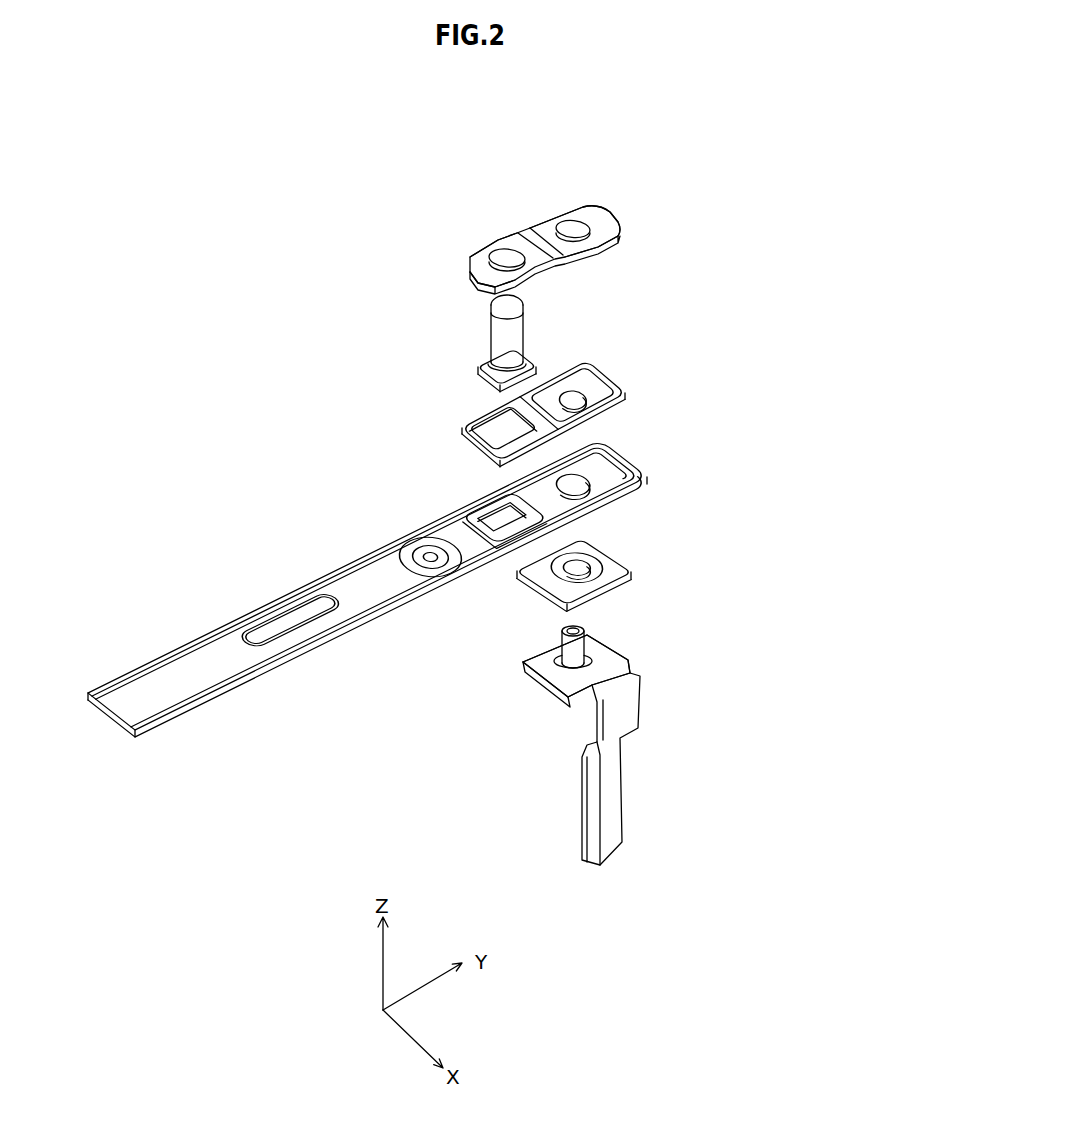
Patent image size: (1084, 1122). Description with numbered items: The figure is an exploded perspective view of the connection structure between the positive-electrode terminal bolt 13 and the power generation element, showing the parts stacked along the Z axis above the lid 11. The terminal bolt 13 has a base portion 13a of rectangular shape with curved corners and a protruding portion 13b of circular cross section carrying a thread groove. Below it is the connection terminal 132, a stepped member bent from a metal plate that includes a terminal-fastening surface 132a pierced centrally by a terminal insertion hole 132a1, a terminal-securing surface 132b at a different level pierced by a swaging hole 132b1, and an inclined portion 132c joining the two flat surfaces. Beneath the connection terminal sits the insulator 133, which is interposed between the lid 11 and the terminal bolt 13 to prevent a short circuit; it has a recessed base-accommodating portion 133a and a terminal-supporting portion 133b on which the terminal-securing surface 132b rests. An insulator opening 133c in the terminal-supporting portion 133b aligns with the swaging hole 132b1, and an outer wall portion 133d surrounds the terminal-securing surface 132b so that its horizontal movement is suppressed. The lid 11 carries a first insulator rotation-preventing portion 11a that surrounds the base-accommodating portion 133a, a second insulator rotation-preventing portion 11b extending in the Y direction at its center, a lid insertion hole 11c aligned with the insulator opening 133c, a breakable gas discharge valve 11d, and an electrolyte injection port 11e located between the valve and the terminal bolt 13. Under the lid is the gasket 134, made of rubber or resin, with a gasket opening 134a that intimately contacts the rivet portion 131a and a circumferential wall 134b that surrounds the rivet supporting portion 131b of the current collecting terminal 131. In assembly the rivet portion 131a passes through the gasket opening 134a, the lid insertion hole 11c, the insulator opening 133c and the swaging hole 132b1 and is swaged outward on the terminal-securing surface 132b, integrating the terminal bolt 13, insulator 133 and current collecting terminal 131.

The lid 11 is at (218, 673).
The first insulator rotation-preventing portion 11a is at (477, 517).
The second insulator rotation-preventing portion 11b is at (505, 520).
The lid insertion hole 11c is at (580, 490).
The gas discharge valve 11d is at (287, 622).
The electrolyte injection port 11e is at (393, 540).
The terminal bolt (positive electrode) 13 is at (549, 335).
The base portion 13a is at (480, 383).
The protruding portion 13b is at (500, 337).
The current collecting terminal (positive electrode) 131 is at (610, 800).
The rivet portion 131a is at (550, 680).
The rivet supporting portion 131b is at (600, 660).
The connection terminal (positive electrode) 132 is at (593, 180).
The terminal-fastening surface 132a is at (497, 238).
The terminal insertion hole 132a1 is at (490, 262).
The terminal-securing surface 132b is at (610, 223).
The swaging hole 132b1 is at (583, 240).
The inclined portion 132c is at (523, 232).
The insulator (first gasket) 133 is at (664, 395).
The base-accommodating portion 133a is at (462, 426).
The terminal-supporting portion 133b is at (604, 390).
The insulator opening 133c is at (588, 412).
The outer wall portion 133d is at (610, 424).
The gasket (second gasket) 134 is at (597, 587).
The gasket opening 134a is at (630, 573).
The circumferential wall 134b is at (568, 650).